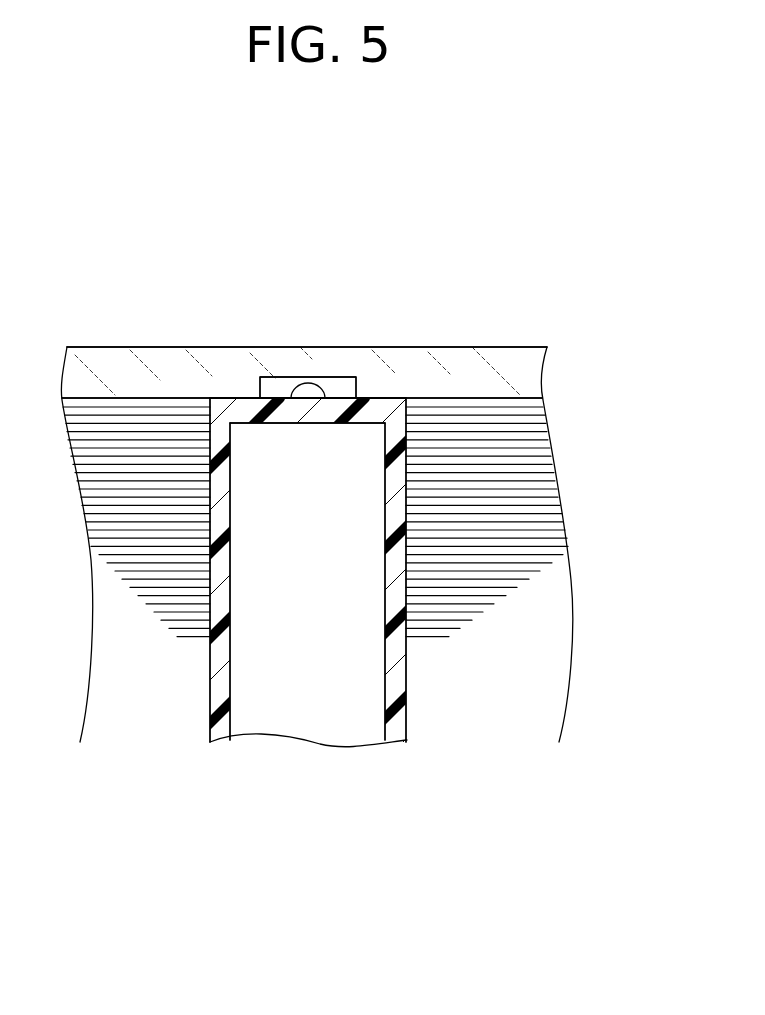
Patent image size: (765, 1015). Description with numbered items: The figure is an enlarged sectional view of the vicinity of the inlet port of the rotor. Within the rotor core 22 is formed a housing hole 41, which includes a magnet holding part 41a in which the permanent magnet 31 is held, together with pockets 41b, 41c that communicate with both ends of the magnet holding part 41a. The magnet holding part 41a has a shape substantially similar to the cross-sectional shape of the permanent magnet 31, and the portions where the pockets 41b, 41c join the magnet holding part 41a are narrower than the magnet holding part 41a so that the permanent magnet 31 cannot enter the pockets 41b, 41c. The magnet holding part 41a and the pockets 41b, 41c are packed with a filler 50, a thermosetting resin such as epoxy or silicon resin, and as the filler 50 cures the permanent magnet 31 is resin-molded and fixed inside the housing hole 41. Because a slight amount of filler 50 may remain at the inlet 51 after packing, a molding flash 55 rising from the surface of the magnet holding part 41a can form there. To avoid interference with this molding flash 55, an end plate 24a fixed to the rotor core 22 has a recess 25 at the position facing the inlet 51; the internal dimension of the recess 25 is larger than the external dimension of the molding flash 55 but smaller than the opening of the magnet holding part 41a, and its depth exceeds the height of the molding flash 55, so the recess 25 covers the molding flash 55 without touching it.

The rotor core 22 is at (538, 643).
The end plate 24a is at (113, 365).
The recess 25 is at (273, 387).
The permanent magnet 31 is at (310, 722).
The housing hole 41 is at (382, 596).
The magnet holding part 41a is at (355, 425).
The pocket 41b is at (407, 673).
The pocket 41c is at (217, 680).
The filler 50 is at (275, 417).
The inlet 51 is at (350, 370).
The molding flash 55 is at (318, 383).